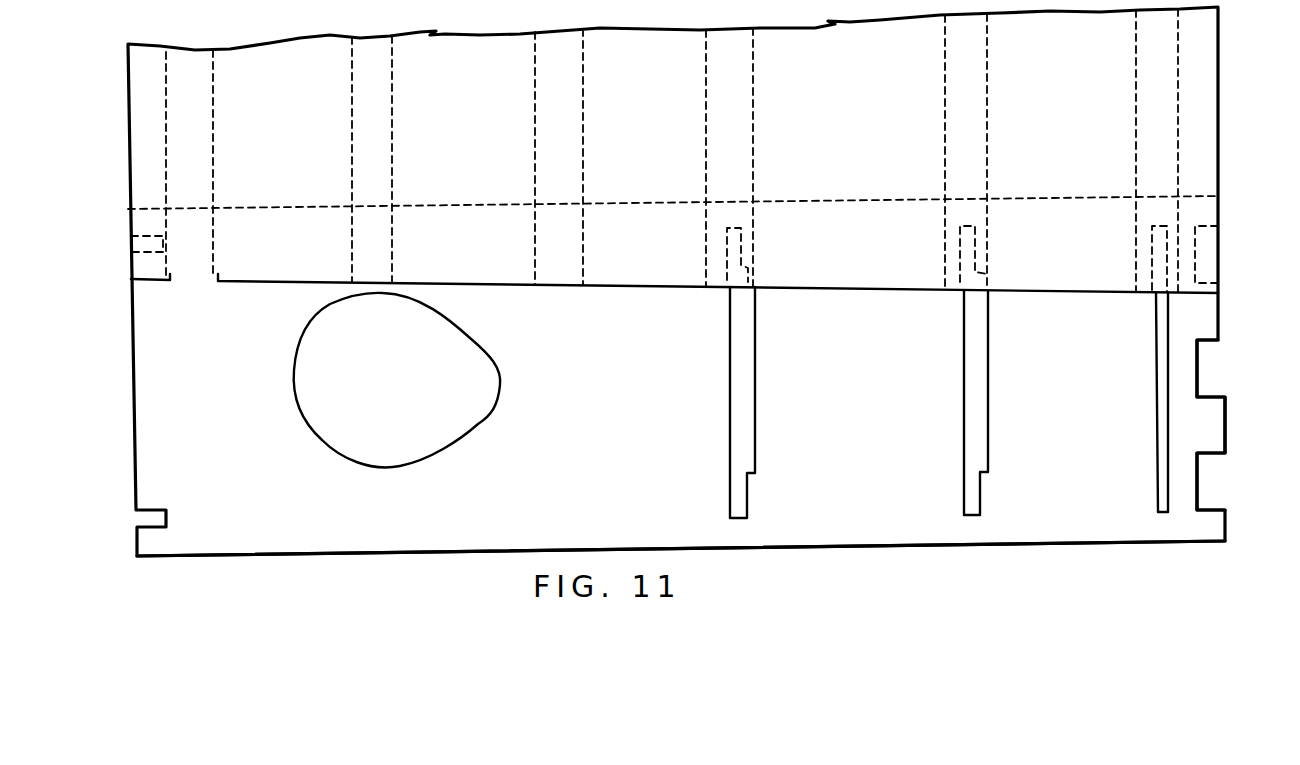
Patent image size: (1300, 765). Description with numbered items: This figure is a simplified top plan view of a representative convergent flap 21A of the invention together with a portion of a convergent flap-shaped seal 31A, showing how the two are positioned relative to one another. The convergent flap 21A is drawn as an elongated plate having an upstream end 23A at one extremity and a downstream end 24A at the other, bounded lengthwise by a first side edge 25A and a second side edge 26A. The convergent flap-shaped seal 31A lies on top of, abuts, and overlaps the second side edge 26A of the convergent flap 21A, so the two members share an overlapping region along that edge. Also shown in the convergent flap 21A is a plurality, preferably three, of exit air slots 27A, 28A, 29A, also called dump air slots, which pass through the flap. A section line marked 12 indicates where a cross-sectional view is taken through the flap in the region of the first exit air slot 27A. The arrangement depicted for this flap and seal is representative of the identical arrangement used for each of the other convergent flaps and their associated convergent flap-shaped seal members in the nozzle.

The section line 12- 12 is at (671, 333).
The convergent flap 21A is at (898, 404).
The upstream end 23A is at (219, 367).
The downstream end 24A is at (1212, 418).
The first side edge 25A is at (1128, 540).
The second side edge 26A is at (1040, 195).
The exit air slot 27A is at (735, 348).
The exit air slot 28A is at (968, 327).
The exit air slot 29A is at (1160, 341).
The convergent flap-shaped seal 31A is at (473, 125).